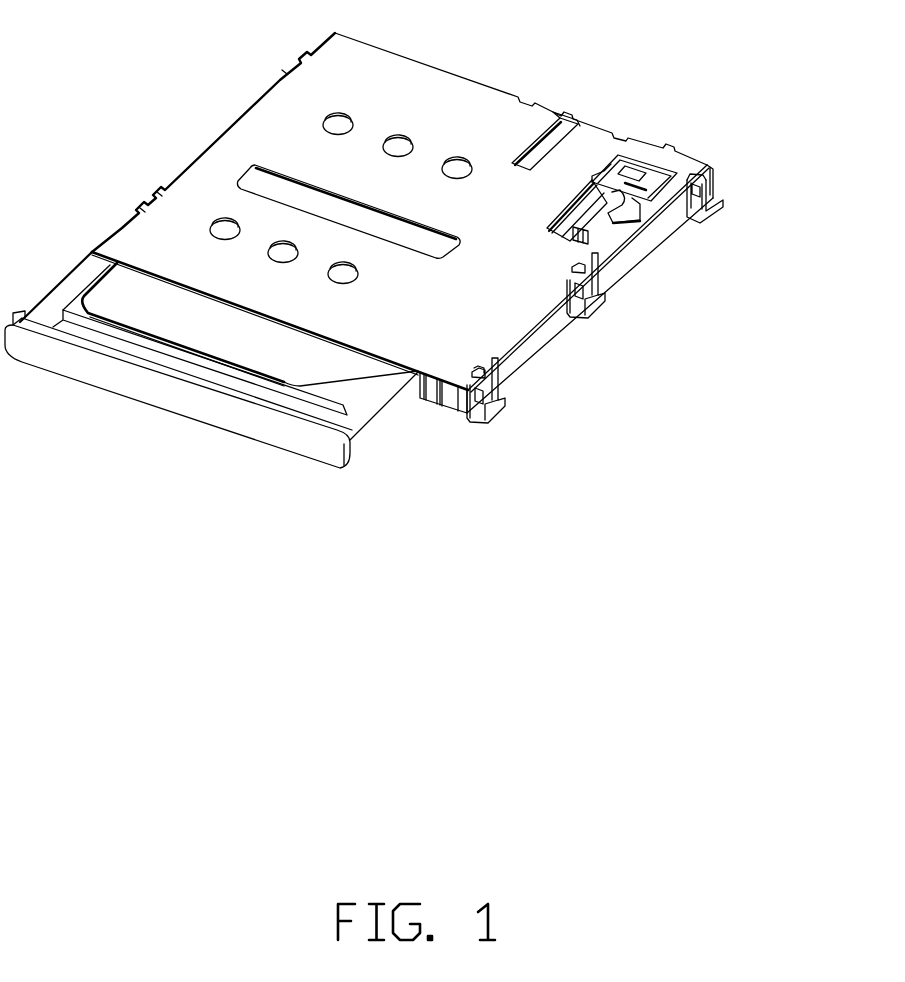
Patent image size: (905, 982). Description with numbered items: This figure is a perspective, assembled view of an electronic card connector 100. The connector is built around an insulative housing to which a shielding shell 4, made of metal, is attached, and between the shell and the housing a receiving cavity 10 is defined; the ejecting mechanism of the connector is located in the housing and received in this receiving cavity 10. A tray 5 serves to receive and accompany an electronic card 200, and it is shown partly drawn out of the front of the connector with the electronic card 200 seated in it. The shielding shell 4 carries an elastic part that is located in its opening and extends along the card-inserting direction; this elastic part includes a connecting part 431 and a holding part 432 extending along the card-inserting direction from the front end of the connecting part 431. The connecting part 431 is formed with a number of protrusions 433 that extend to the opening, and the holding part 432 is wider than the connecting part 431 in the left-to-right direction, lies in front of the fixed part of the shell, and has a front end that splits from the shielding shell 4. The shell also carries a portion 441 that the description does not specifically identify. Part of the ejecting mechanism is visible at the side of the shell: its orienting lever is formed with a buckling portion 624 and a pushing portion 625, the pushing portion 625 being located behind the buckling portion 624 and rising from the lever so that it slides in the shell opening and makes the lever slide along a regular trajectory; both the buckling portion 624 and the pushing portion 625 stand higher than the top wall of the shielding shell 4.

The electronic card connector 100 is at (168, 132).
The receiving cavity 10 is at (417, 397).
The shielding shell 4 is at (398, 87).
The tray 5 is at (140, 380).
The electronic card 200 is at (248, 343).
The connecting part 431 is at (628, 210).
The holding part 432 is at (637, 178).
The protrusions 433 is at (630, 196).
The soldering leg 441 is at (578, 232).
The buckling portion 624 is at (612, 220).
The pushing portion 625 is at (589, 231).